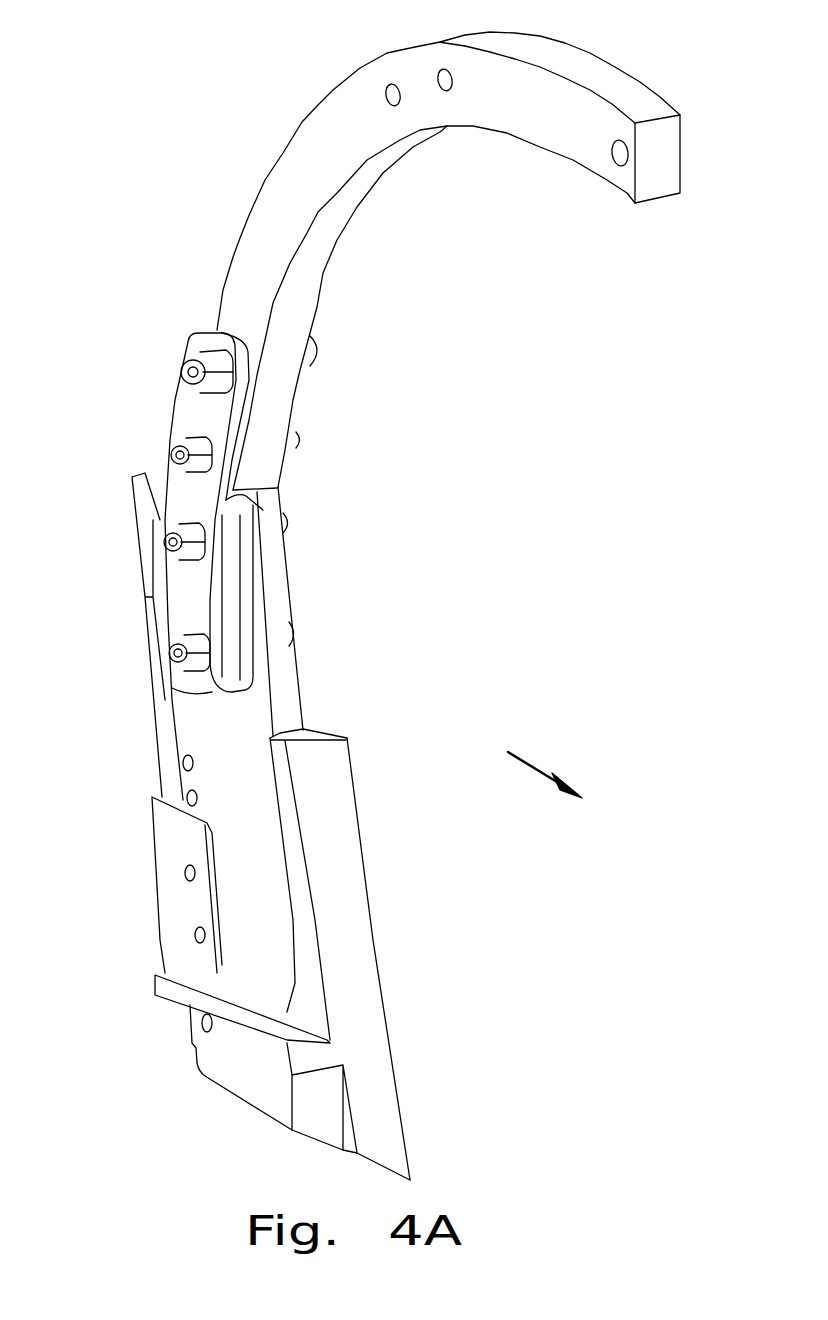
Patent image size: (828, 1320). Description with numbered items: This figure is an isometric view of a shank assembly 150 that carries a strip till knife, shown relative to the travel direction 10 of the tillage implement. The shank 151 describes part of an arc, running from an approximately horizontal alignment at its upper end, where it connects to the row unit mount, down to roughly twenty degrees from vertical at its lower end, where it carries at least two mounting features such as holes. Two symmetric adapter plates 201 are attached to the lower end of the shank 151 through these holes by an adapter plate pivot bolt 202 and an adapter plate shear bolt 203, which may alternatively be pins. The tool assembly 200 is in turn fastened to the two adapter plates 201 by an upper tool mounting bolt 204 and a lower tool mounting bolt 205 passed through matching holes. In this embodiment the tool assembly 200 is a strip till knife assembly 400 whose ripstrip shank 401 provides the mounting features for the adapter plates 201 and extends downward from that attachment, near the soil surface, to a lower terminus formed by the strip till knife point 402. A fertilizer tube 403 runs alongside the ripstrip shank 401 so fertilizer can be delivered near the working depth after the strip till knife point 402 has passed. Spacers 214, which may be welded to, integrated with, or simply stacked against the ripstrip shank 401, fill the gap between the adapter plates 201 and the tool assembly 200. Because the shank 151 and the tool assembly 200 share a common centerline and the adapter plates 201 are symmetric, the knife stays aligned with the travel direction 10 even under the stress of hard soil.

The travel direction 10 is at (540, 770).
The shank assembly 150 is at (528, 140).
The shank 151 is at (613, 82).
The tool assembly 200 is at (348, 752).
The adapter plates 201 is at (180, 413).
The adapter plate pivot bolt 202 is at (185, 370).
The adapter plate shear bolt 203 is at (172, 455).
The upper tool mounting bolt 204 is at (165, 545).
The lower tool mounting bolt 205 is at (170, 657).
The spacers 214 is at (242, 617).
The strip till knife assembly 400 is at (366, 850).
The ripstrip shank 401 is at (288, 686).
The strip till knife point 402 is at (407, 1120).
The fertilizer tube 403 is at (138, 498).